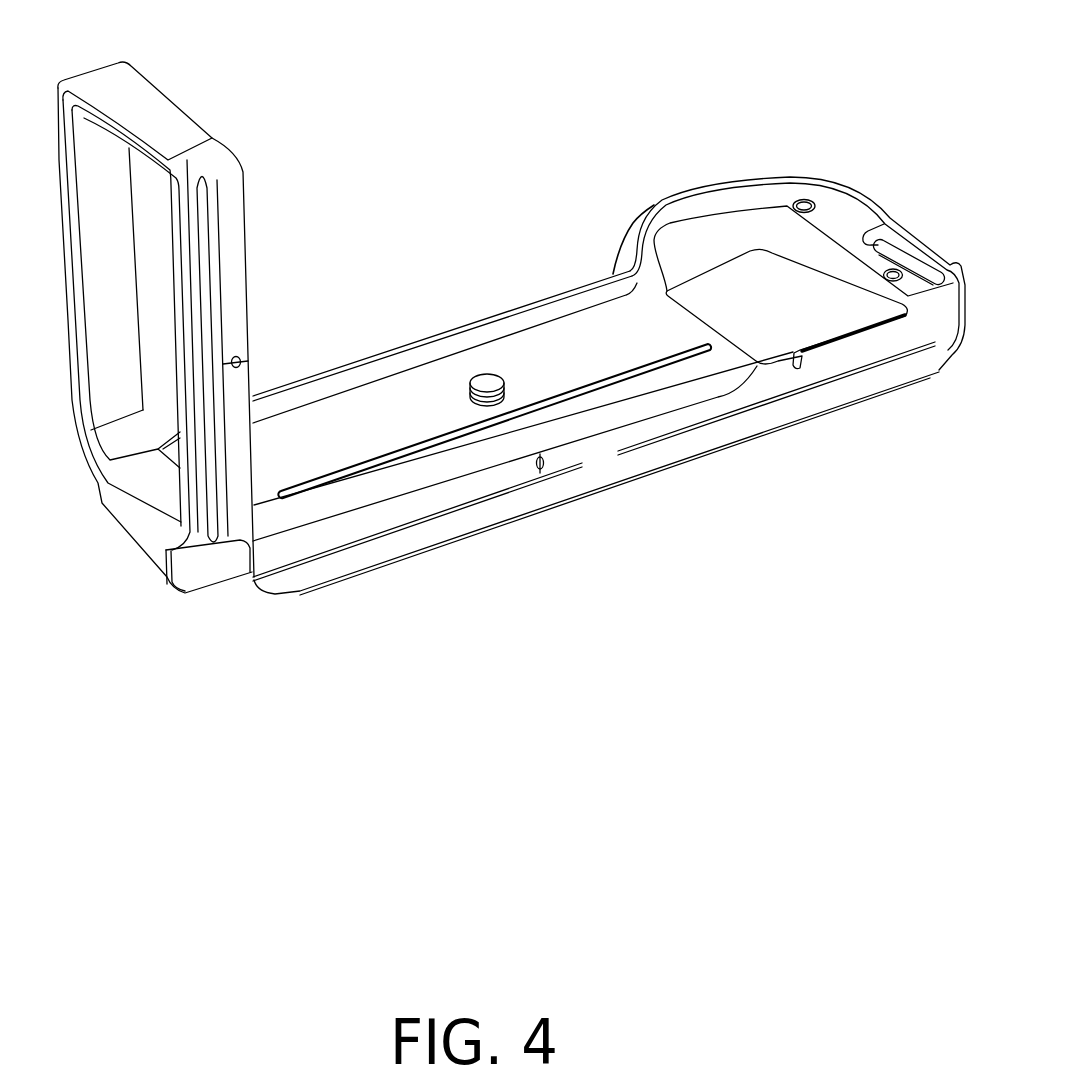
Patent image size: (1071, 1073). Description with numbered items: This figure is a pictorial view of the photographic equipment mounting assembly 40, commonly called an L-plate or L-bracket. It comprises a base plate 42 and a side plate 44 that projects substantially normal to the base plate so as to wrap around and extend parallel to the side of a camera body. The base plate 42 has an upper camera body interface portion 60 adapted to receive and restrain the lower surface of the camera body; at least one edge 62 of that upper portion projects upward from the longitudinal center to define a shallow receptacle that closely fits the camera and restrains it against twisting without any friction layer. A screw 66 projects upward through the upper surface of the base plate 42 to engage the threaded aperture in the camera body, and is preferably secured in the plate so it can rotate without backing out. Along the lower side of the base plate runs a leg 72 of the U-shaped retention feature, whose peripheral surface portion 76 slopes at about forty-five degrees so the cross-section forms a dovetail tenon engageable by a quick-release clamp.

The photographic equipment mounting assembly 40 is at (430, 232).
The base plate 42 is at (930, 327).
The side plate 44 is at (214, 92).
The upper camera body interface portion 60 is at (310, 452).
The edge 62 is at (553, 318).
The screw 66 is at (485, 386).
The leg 72 is at (470, 527).
The sloping surface portion 76 is at (614, 480).